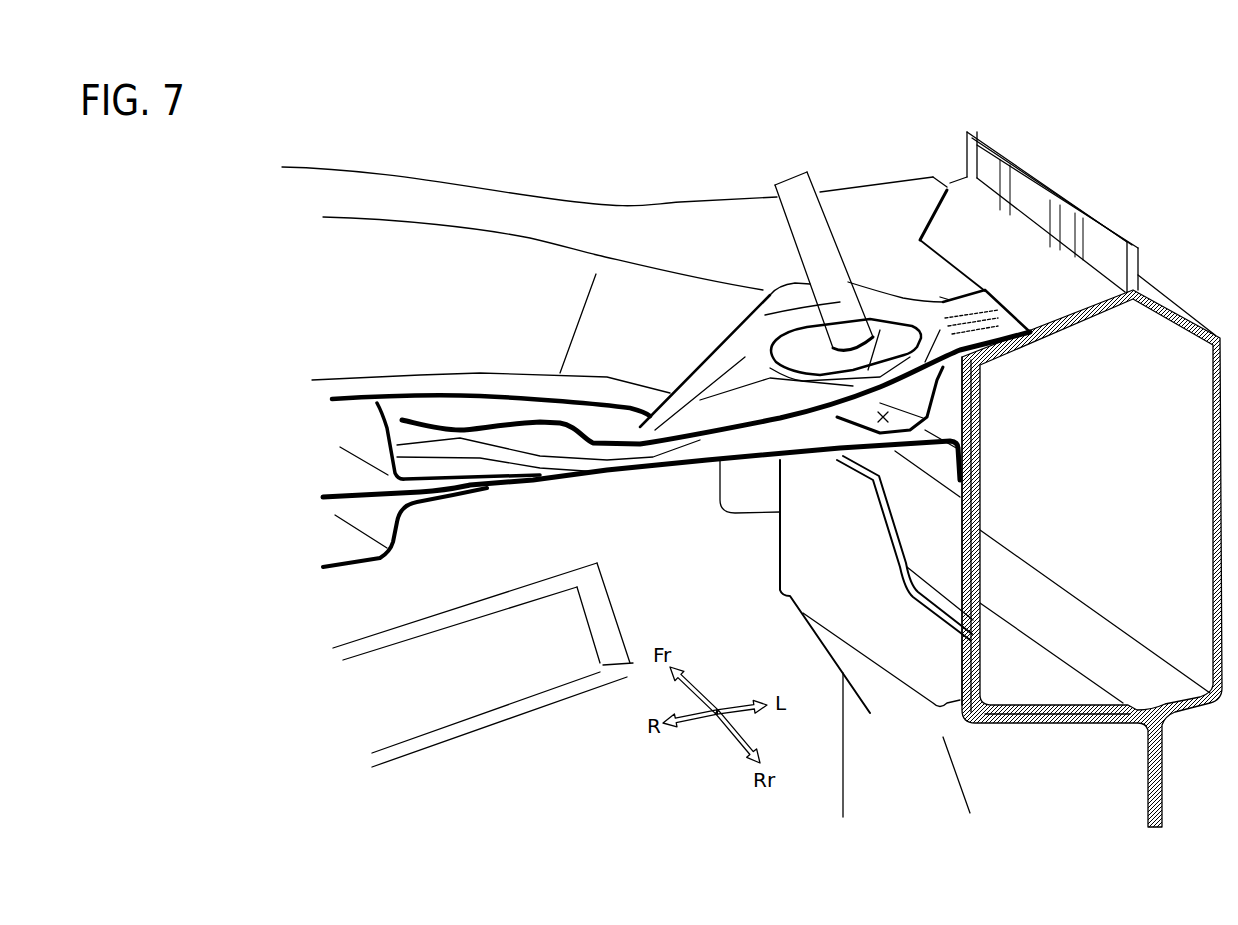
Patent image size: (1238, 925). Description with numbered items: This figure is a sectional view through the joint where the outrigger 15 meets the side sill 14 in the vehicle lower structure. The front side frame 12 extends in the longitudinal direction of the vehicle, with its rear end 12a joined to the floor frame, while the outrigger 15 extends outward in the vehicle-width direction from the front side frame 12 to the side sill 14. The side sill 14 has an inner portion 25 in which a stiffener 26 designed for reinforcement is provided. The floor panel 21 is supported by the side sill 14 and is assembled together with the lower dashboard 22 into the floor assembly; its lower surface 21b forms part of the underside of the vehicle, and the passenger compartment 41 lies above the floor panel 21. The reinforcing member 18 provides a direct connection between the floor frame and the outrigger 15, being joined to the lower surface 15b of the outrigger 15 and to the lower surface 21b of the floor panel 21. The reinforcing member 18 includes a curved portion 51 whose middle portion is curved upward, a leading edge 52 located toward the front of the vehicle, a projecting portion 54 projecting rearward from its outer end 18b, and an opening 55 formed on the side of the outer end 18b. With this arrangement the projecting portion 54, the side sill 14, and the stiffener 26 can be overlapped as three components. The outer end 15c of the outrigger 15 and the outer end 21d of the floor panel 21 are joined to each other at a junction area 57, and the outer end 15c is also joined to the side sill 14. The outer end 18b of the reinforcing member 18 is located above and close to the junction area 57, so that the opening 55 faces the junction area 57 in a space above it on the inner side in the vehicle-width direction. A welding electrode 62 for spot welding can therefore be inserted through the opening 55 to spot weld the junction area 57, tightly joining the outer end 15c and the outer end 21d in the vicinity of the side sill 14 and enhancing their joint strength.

The front side frame 12 is at (354, 370).
The rear end of the front side frame 12a is at (356, 397).
The side sill 14 is at (1002, 247).
The outrigger 15 is at (553, 200).
The lower surface of the outrigger 15b is at (698, 225).
The outer end of the outrigger 15c is at (940, 297).
The reinforcing member 18 is at (688, 375).
The outer end of the reinforcing member 18b is at (957, 283).
The floor panel 21 is at (643, 448).
The lower surface of the floor panel 21b is at (533, 465).
The outer end of the floor panel 21d is at (862, 438).
The lower dashboard 22 is at (650, 568).
The inner portion of the side sill 25 is at (1075, 504).
The stiffener 26 is at (982, 415).
The passenger compartment 41 is at (550, 661).
The curved portion 51 is at (578, 450).
The leading edge 52 is at (660, 413).
The projecting portion 54 is at (1013, 313).
The opening 55 is at (780, 352).
The junction area 57 is at (897, 422).
The welding electrode 62 is at (812, 232).